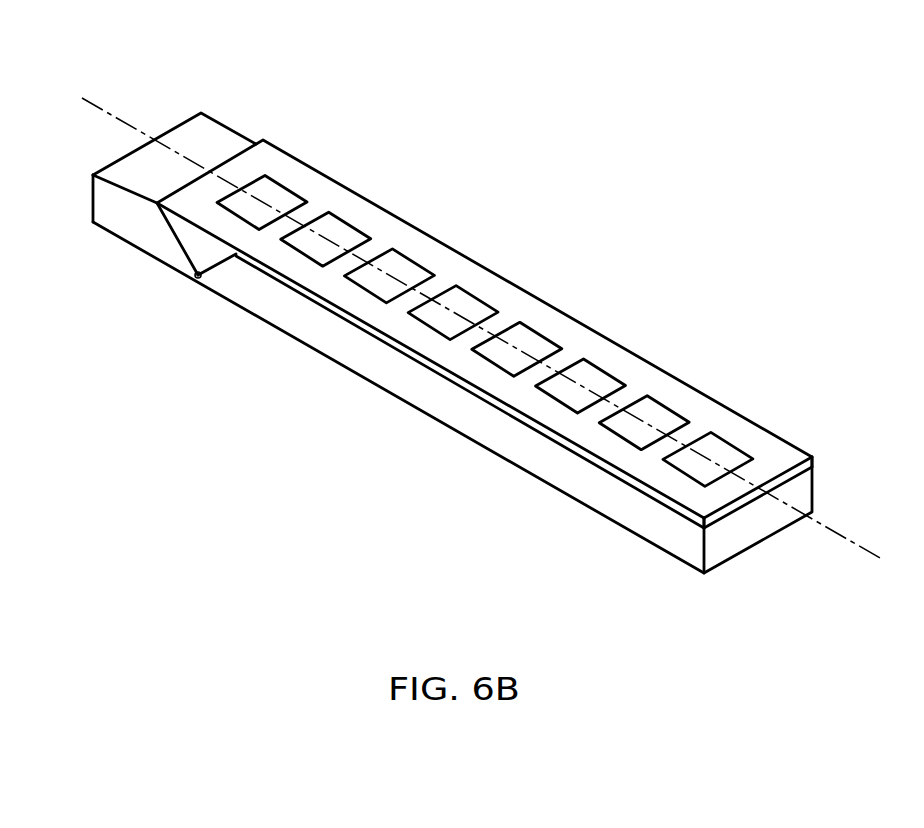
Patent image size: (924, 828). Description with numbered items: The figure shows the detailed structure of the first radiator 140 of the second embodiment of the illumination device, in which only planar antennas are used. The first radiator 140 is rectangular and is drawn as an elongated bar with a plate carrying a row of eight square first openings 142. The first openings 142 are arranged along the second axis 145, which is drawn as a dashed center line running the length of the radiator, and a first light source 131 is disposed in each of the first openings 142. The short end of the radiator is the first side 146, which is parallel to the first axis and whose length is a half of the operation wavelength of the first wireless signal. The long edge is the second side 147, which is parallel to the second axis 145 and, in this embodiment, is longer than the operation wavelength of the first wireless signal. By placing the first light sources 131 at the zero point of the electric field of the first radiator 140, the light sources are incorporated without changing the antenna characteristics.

The first radiator 140 is at (697, 332).
The first opening 142 is at (250, 187).
The first light source 131 is at (280, 200).
The second axis 145 is at (838, 533).
The first side 146 is at (728, 507).
The second side 147 is at (668, 500).